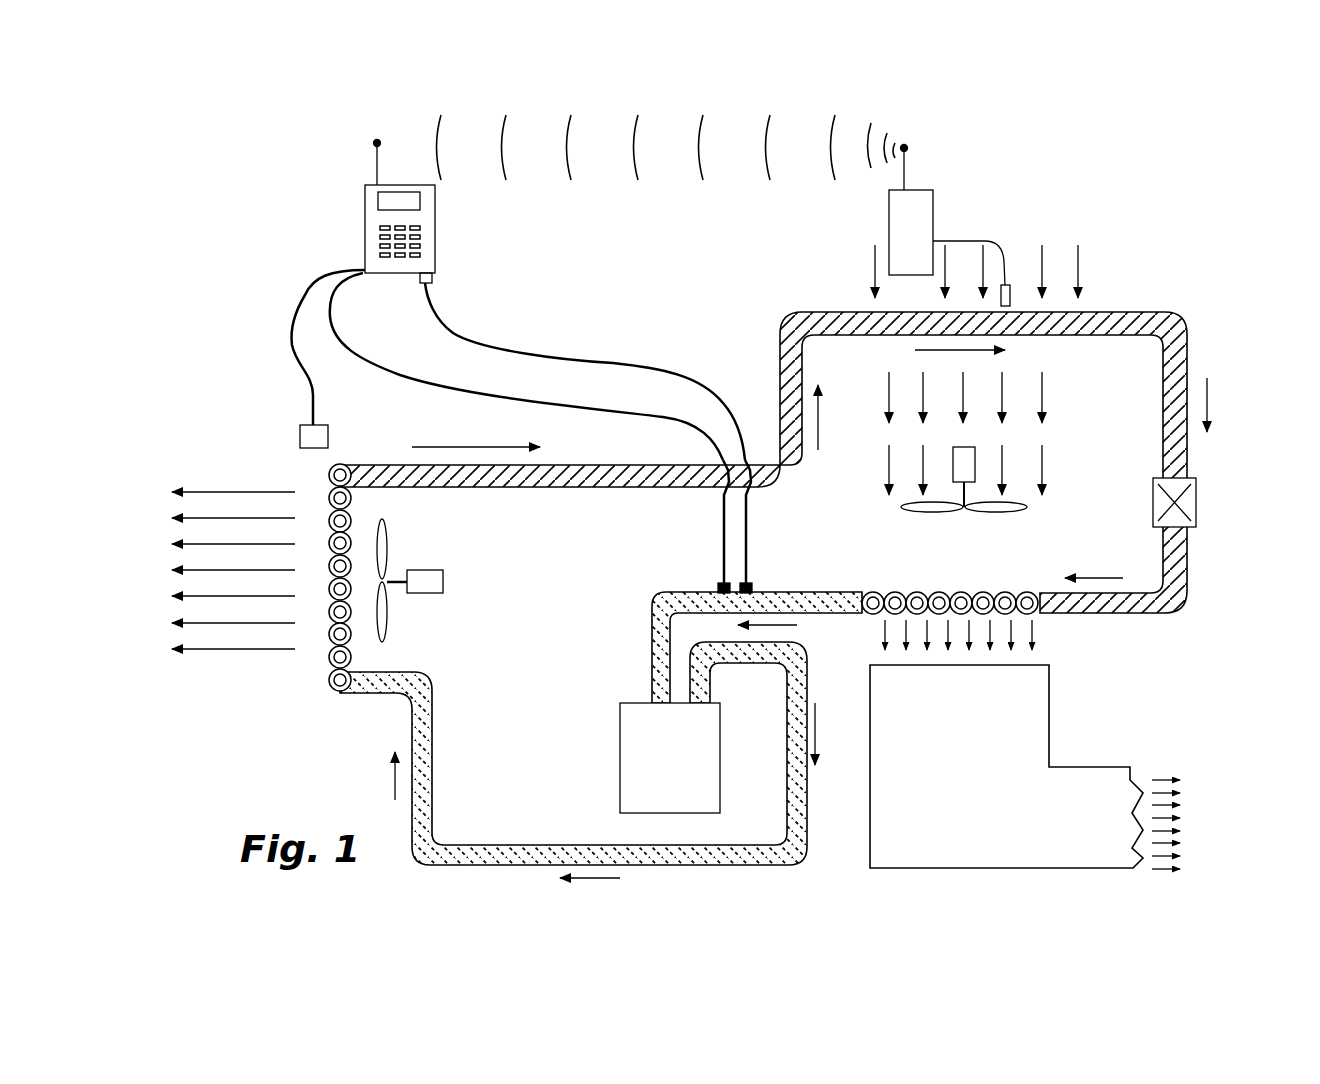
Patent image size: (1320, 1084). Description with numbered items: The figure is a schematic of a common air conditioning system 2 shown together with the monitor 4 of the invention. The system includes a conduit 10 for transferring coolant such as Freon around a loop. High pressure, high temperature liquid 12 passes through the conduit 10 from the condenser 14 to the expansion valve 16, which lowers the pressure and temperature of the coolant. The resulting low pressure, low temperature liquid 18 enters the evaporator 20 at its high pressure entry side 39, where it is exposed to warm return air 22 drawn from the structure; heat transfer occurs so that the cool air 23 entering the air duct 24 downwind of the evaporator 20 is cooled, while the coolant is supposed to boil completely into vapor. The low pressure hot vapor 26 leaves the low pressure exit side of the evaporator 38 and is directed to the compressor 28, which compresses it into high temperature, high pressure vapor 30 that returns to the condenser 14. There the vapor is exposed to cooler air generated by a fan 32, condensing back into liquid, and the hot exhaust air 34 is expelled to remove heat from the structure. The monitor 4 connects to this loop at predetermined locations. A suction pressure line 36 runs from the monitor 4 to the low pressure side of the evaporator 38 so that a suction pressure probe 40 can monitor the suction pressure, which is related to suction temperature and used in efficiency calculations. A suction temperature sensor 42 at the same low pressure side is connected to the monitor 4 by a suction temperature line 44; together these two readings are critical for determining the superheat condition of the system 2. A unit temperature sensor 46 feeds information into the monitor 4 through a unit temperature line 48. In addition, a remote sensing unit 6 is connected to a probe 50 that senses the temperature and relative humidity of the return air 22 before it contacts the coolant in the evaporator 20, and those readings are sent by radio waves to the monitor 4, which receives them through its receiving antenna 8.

The air conditioning system 2 is at (762, 300).
The monitor 4 is at (365, 226).
The remote sensing unit 6 is at (934, 208).
The receiving antenna 8 is at (376, 163).
The conduit 10 is at (1137, 312).
The high pressure, high temperature liquid 12 is at (1190, 372).
The condenser 14 is at (326, 686).
The expansion valve 16 is at (1197, 503).
The low pressure, low temperature liquid 18 is at (1150, 615).
The evaporator 20 is at (1032, 610).
The return air 22 is at (1042, 462).
The cool air 23 is at (1182, 813).
The air duct 24 is at (1022, 868).
The low pressure hot vapor 26 is at (653, 600).
The compressor 28 is at (620, 765).
The high temperature, high pressure vapor 30 is at (740, 850).
The fan 32 is at (438, 593).
The exhaust air 34 is at (246, 657).
The suction pressure line 36 is at (645, 362).
The low pressure, exit side of the evaporator 38 is at (828, 613).
The high pressure entry side of the evaporator 39 is at (1045, 592).
The suction pressure probe 40 is at (752, 587).
The suction temperature sensor 42 is at (718, 585).
The suction temperature line 44 is at (558, 403).
The unit temperature sensor 46 is at (330, 435).
The unit temperature line 48 is at (292, 363).
The probe 50 is at (1012, 285).